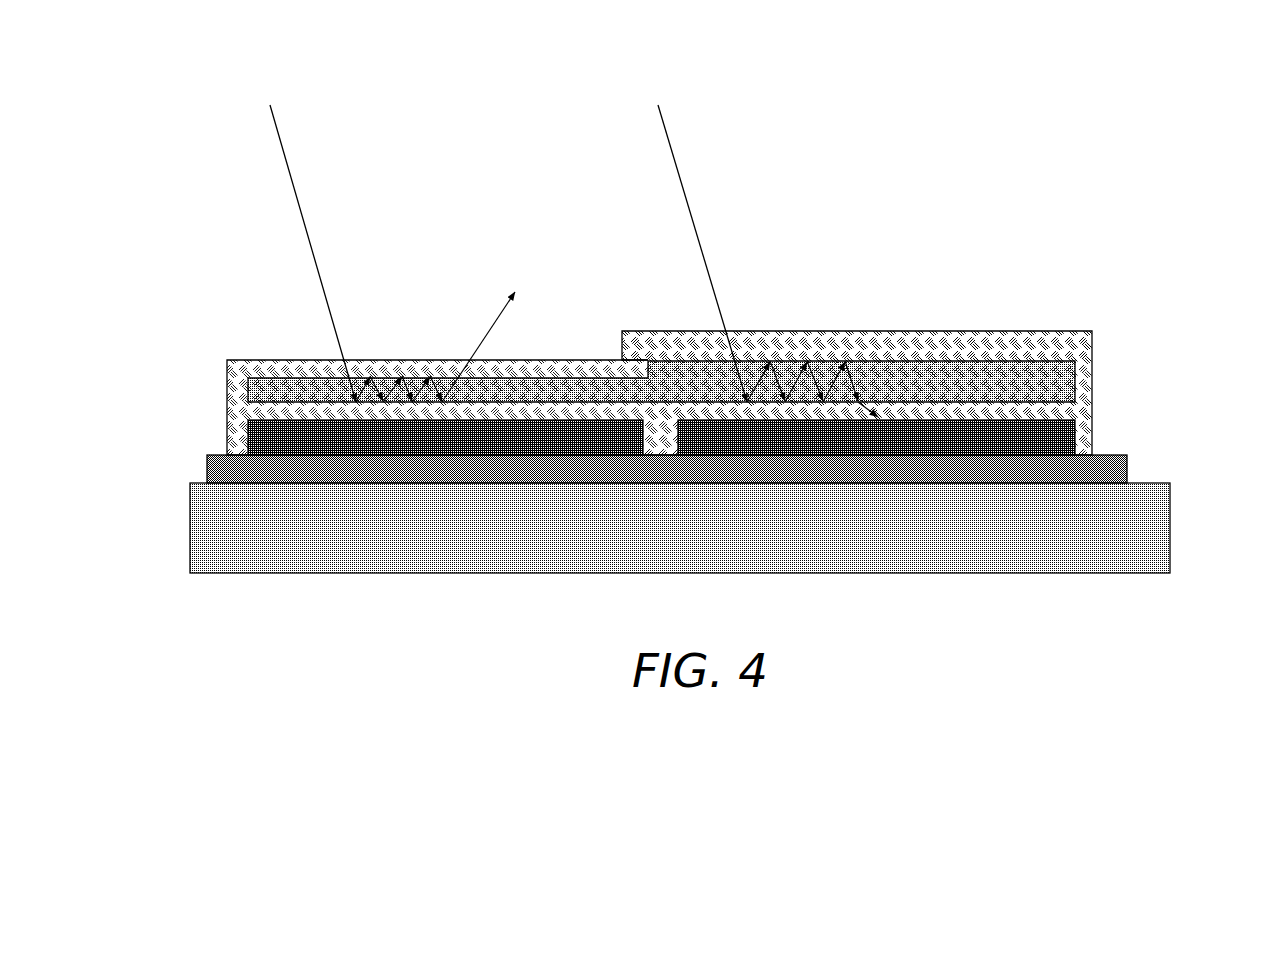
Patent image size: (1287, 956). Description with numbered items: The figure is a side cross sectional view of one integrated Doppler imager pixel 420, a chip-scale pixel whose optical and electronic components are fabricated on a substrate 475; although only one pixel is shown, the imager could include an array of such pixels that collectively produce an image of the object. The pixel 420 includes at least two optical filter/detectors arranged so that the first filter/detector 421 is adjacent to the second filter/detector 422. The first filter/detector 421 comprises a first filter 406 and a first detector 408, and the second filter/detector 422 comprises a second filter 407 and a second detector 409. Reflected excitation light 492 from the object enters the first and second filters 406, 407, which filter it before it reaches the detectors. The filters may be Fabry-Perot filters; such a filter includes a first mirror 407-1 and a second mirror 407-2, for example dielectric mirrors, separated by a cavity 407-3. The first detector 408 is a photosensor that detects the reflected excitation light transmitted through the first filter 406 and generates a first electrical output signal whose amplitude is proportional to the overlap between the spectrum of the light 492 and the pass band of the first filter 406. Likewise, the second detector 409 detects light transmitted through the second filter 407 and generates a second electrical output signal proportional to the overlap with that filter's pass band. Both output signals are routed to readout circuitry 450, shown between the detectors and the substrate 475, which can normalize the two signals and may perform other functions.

The integrated Doppler imager pixel 420 is at (545, 110).
The first filter/detector 421 is at (292, 330).
The second filter/detector 422 is at (830, 272).
The first filter 406 is at (228, 387).
The second filter 407 is at (1093, 348).
The first mirror 407-1 is at (1021, 407).
The second mirror 407-2 is at (1008, 337).
The cavity 407-3 is at (945, 375).
The first detector 408 is at (248, 440).
The second detector 409 is at (1075, 428).
The readout circuitry 450 is at (1127, 468).
The substrate 475 is at (1133, 535).
The reflected excitation light 492 is at (288, 167).